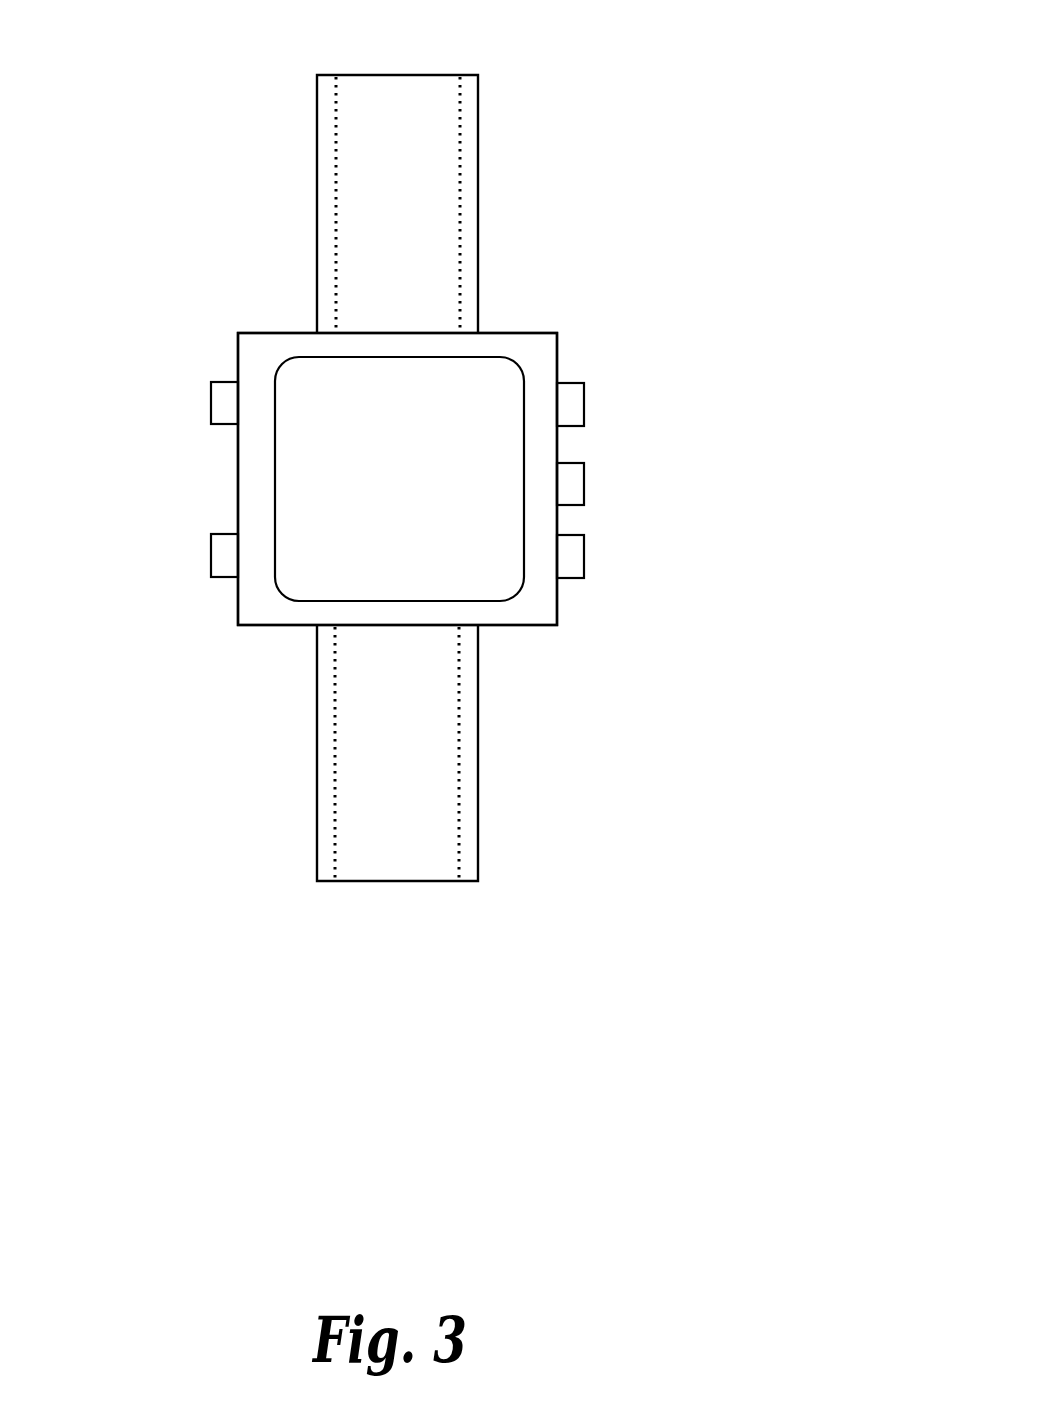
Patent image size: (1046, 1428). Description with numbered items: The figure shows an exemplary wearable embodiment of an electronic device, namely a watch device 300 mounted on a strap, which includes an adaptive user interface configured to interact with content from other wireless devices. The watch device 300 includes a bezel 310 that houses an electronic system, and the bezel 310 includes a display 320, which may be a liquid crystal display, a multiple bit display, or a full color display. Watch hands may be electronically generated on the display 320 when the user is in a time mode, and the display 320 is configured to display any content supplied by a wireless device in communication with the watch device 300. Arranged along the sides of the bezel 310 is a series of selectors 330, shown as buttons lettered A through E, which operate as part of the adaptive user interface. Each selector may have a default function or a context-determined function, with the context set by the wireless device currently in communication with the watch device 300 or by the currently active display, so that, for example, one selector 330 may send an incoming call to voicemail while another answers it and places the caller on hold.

The watch device 300 is at (601, 76).
The bezel 310 is at (570, 300).
The display 320 is at (542, 358).
The selectors 330 is at (451, 472).